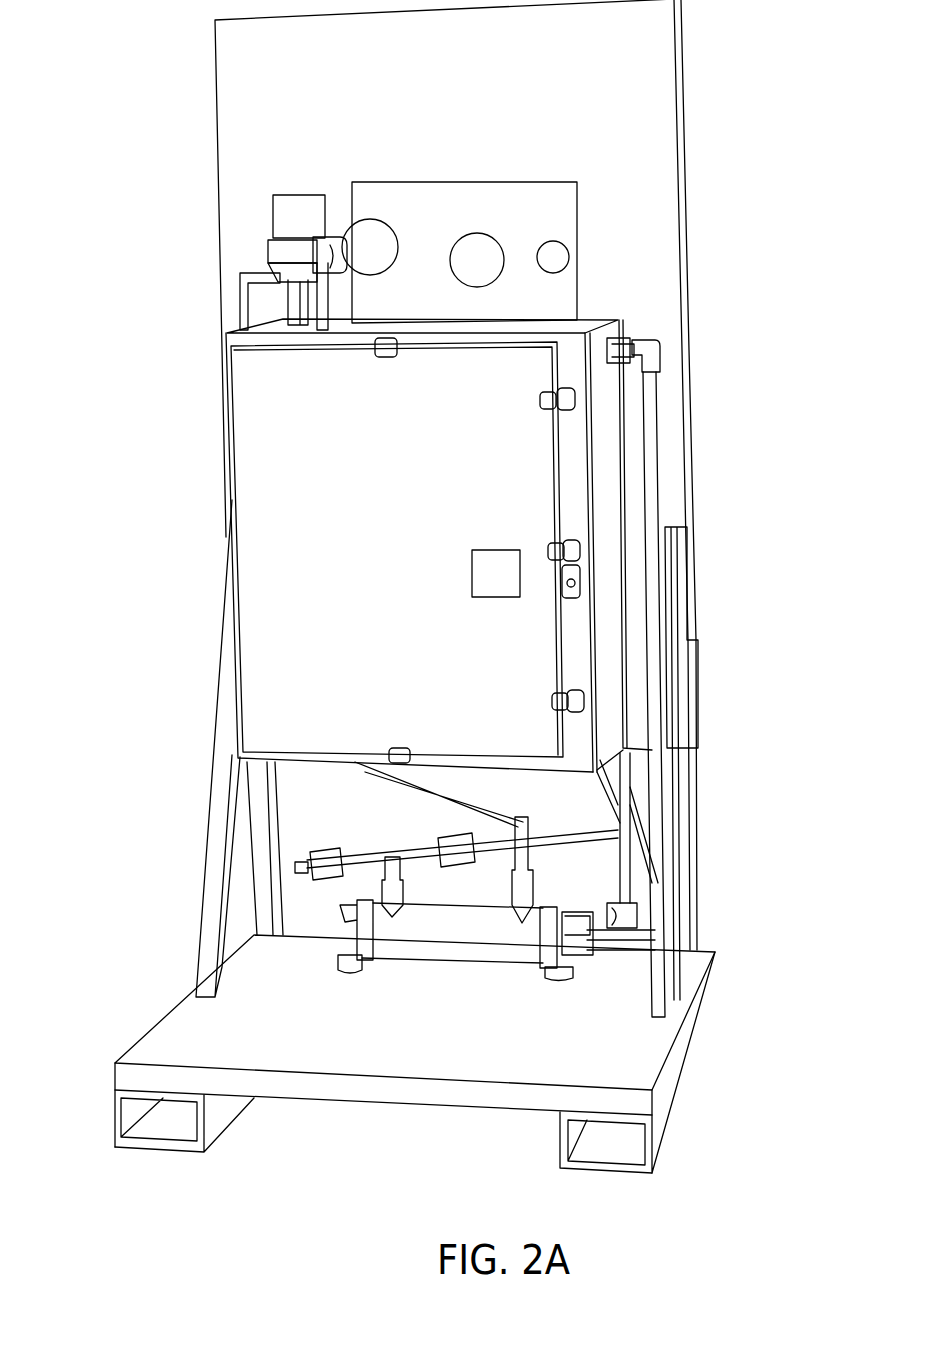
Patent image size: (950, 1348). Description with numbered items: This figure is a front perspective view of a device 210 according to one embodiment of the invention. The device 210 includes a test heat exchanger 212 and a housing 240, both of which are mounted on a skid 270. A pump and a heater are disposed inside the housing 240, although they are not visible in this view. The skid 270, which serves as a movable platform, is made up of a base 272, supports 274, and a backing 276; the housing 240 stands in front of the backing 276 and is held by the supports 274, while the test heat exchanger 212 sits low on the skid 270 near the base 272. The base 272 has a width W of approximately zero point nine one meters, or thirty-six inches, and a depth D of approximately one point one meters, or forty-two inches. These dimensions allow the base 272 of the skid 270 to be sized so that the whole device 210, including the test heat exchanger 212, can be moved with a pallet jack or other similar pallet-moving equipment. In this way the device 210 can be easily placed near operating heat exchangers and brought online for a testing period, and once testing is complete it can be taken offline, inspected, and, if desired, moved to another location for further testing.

The device 210 is at (708, 444).
The test heat exchanger 212 is at (437, 958).
The housing 240 is at (607, 625).
The skid 270 is at (693, 957).
The base 272 is at (660, 1110).
The supports 274 is at (218, 835).
The backing 276 is at (677, 318).
The depth D is at (197, 935).
The width W is at (668, 1178).